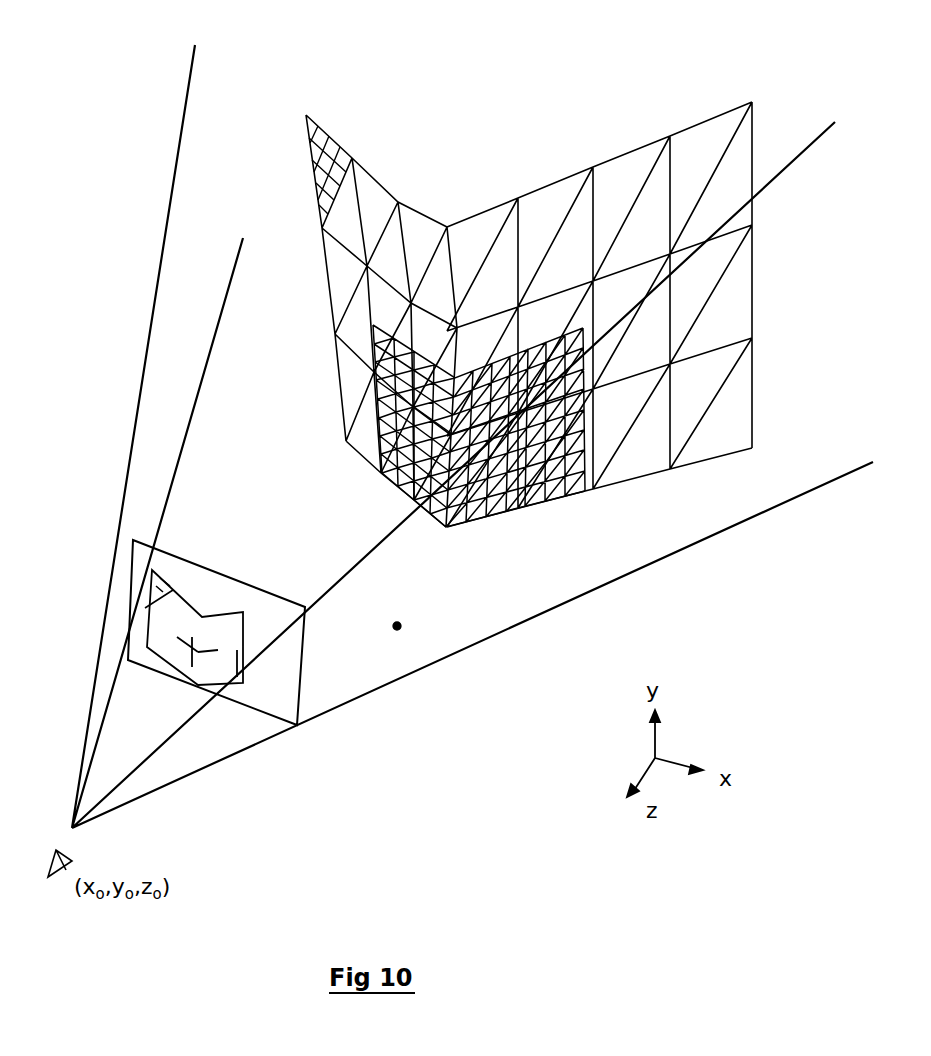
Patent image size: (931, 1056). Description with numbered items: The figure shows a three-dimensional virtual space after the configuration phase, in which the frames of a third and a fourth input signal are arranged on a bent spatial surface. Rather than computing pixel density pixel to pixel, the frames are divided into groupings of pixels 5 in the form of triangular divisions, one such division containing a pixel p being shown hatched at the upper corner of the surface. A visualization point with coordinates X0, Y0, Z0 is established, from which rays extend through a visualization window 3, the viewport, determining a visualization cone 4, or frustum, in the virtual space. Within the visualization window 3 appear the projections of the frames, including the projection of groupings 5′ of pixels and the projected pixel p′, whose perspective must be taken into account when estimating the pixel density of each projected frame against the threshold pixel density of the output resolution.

The grouping of pixels 5 is at (335, 162).
The pixel p is at (308, 113).
The visualization window 3 is at (300, 696).
The visualization cone 4 is at (402, 632).
The projection of groupings of pixels 5′ is at (145, 606).
The projected pixel p′ is at (152, 567).